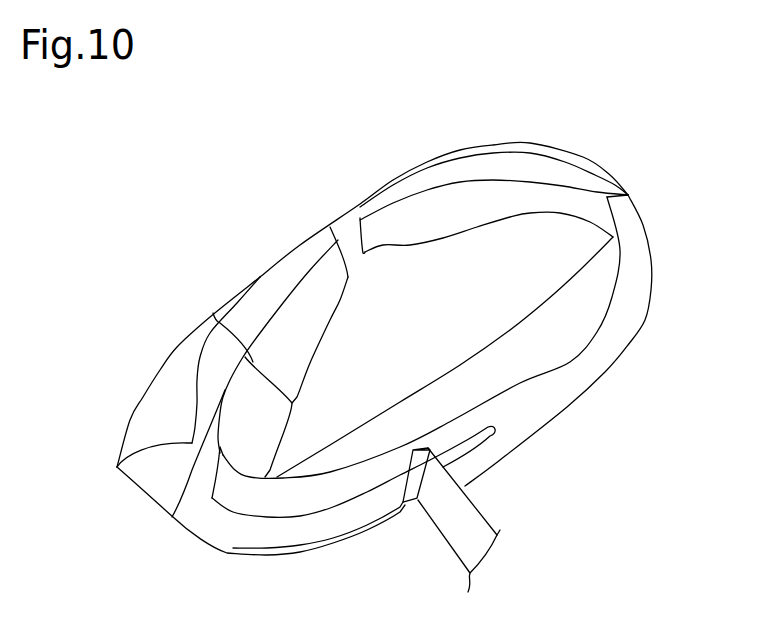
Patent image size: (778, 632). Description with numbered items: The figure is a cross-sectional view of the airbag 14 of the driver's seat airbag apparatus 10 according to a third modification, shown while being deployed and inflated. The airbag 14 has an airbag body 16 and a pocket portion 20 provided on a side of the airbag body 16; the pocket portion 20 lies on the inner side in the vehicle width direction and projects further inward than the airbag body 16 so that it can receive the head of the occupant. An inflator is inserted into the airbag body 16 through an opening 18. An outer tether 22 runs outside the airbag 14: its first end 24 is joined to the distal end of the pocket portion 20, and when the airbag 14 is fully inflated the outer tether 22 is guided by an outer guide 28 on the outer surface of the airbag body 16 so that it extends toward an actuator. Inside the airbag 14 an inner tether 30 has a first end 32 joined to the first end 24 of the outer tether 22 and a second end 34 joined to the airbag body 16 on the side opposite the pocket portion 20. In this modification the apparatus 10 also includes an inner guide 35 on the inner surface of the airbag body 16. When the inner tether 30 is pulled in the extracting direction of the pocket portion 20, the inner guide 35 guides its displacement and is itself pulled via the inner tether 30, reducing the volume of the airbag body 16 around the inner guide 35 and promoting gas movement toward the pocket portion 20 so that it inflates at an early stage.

The driver's seat airbag apparatus 10 is at (207, 222).
The airbag 14 is at (261, 511).
The airbag body 16 is at (153, 393).
The opening 18 is at (494, 432).
The pocket portion 20 is at (142, 478).
The outer tether 22 is at (453, 538).
The first end of outer tether 24 is at (267, 405).
The outer guide 28 is at (420, 462).
The inner tether 30 is at (417, 210).
The first end of inner tether 32 is at (213, 313).
The second end of inner tether 34 is at (597, 202).
The inner guide 35 is at (348, 227).